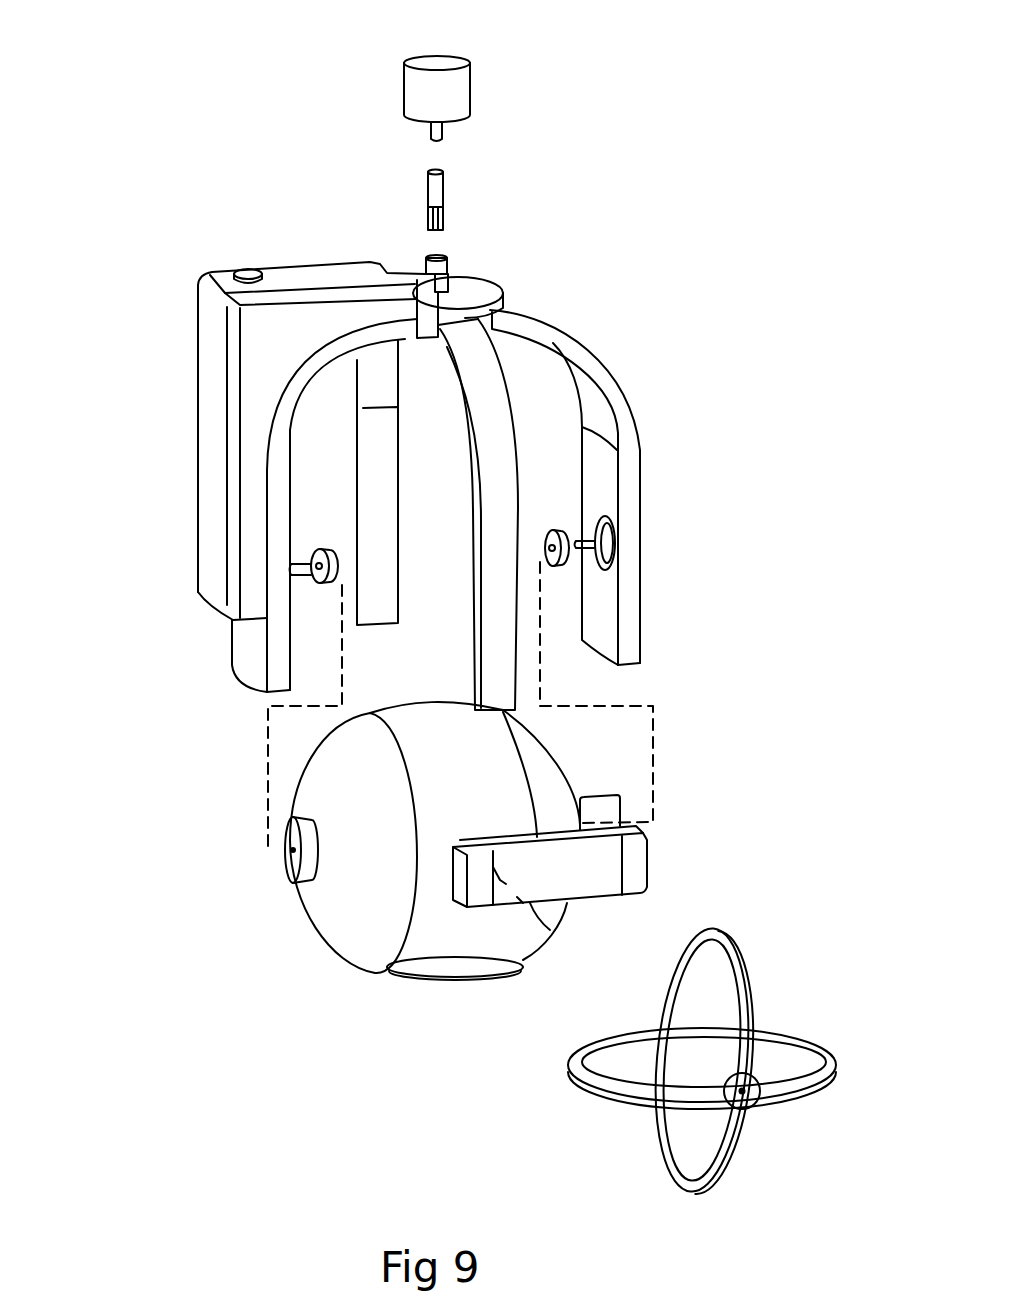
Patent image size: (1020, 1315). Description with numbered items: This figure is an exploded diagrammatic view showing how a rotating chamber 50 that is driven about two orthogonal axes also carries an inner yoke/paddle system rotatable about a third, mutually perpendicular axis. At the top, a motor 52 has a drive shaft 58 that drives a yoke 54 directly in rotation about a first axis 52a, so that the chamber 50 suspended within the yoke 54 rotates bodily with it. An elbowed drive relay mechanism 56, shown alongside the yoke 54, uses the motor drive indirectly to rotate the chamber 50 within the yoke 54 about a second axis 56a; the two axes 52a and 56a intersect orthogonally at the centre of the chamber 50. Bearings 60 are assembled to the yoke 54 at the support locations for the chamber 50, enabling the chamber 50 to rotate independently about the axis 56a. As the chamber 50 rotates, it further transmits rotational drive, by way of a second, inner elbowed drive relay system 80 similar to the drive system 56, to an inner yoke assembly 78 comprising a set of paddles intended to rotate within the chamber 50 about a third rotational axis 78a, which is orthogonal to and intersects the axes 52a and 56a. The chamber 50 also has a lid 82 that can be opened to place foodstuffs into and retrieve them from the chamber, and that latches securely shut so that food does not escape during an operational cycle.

The rotating chamber 50 is at (347, 923).
The motor 52 is at (458, 90).
The first axis 52a is at (437, 258).
The yoke 54 is at (607, 372).
The elbowed drive relay mechanism 56 is at (156, 309).
The second axis 56a is at (323, 848).
The drive shaft 58 is at (447, 190).
The bearings 60 is at (330, 550).
The inner yoke assembly 78 is at (770, 964).
The third rotational axis 78a is at (515, 895).
The inner elbowed drive relay system 80 is at (665, 828).
The lid 82 is at (440, 975).